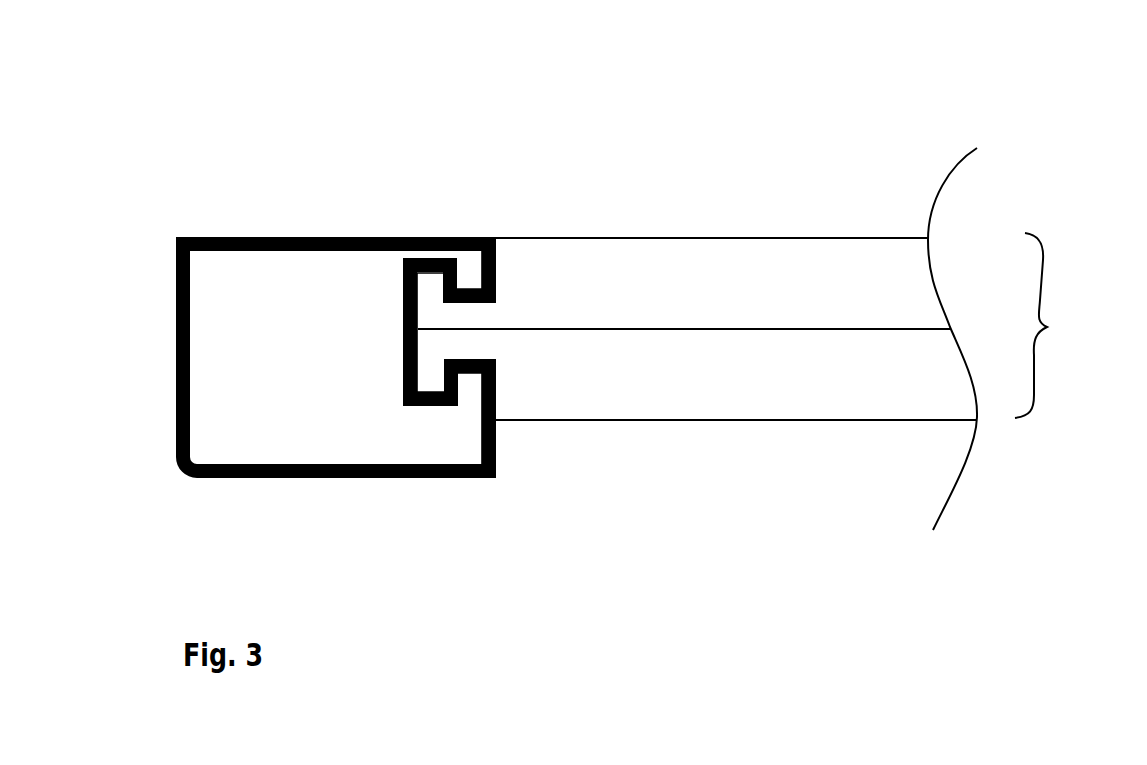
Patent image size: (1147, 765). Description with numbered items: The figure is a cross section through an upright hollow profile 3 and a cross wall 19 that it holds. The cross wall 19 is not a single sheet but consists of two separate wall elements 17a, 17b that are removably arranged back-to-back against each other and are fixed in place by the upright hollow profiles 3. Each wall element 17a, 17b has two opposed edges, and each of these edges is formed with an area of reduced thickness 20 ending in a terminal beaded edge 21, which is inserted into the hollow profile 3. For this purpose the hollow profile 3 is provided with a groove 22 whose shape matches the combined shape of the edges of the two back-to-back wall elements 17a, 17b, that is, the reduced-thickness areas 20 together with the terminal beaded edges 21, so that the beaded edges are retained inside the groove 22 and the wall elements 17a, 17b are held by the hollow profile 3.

The hollow profile 3 is at (310, 435).
The wall element 17a is at (557, 268).
The wall element 17b is at (691, 390).
The cross wall 19 is at (1061, 325).
The reduced thickness 20 is at (473, 320).
The terminal beaded edge 21 is at (427, 292).
The groove 22 is at (405, 318).